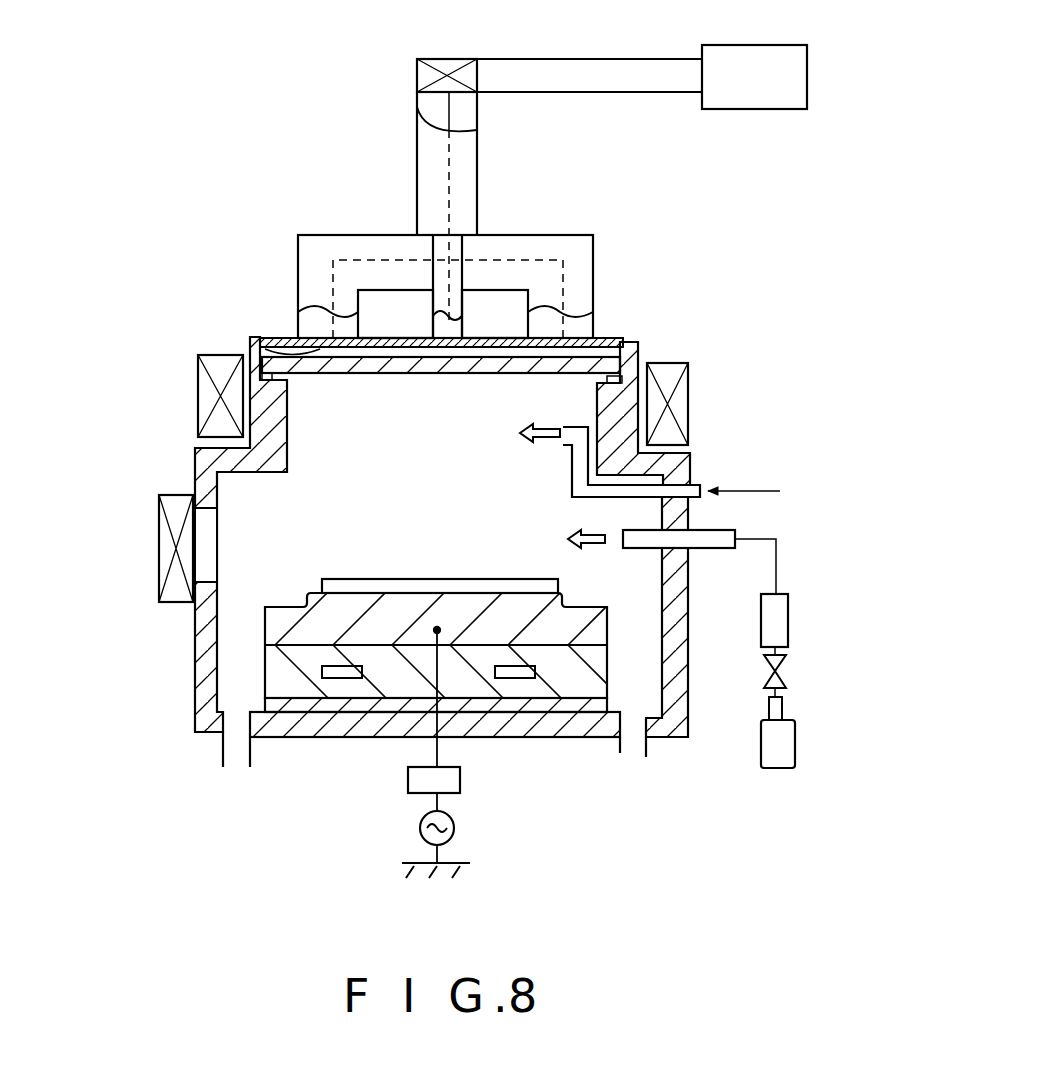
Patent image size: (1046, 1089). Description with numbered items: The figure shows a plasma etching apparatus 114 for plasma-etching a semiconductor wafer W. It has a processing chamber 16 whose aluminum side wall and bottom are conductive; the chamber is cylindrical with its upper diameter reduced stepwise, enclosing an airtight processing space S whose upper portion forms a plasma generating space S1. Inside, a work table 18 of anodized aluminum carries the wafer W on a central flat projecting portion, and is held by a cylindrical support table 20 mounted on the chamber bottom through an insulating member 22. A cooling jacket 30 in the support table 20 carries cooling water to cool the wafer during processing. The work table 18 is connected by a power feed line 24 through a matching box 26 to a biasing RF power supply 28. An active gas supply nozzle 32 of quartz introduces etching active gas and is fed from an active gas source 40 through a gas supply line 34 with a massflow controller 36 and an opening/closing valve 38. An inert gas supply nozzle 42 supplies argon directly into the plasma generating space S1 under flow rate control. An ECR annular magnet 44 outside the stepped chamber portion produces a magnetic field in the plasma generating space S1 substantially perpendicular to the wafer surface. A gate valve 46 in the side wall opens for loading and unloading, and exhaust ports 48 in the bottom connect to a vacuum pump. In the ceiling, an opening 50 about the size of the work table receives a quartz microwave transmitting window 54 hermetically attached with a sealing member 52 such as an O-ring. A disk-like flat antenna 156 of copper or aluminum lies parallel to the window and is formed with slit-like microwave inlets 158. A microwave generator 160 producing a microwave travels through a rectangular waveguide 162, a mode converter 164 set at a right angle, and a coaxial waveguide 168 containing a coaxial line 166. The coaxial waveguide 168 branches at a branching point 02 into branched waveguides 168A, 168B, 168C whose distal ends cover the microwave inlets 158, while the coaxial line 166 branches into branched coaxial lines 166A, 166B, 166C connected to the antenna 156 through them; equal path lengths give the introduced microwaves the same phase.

The processing chamber 16 is at (680, 458).
The work table 18 is at (282, 607).
The support table 20 is at (273, 678).
The insulating member 22 is at (373, 712).
The power feed line 24 is at (440, 748).
The matching box 26 is at (460, 780).
The biasing RF power supply 28 is at (455, 826).
The cooling jacket 30 is at (328, 678).
The active gas supply nozzle 32 is at (730, 533).
The gas supply line 34 is at (776, 560).
The massflow controller 36 is at (788, 612).
The opening/closing valve 38 is at (786, 660).
The active gas source 40 is at (795, 735).
The inert gas supply nozzle 42 is at (700, 487).
The ECR annular magnet 44 is at (197, 405).
The gate valve 46 is at (159, 560).
The exhaust ports 48 is at (232, 758).
The opening 50 is at (363, 377).
The sealing member 52 is at (245, 346).
The microwave transmitting window 54 is at (637, 352).
The plasma etching apparatus 114 is at (142, 737).
The flat antenna 156 is at (277, 337).
The microwave inlets 158 is at (263, 350).
The microwave generator 160 is at (807, 73).
The rectangular waveguide 162 is at (577, 59).
The mode converter 164 is at (458, 58).
The coaxial line 166 is at (455, 116).
The branched coaxial line 166A is at (322, 323).
The branched coaxial line 166B is at (440, 305).
The branched coaxial line 166C is at (568, 326).
The coaxial waveguide 168 is at (477, 157).
The branched waveguide 168A is at (316, 235).
The branched waveguide 168B is at (528, 303).
The branched waveguide 168C is at (593, 244).
The branching point 02 is at (450, 258).
The semiconductor wafer W is at (330, 578).
The processing space S is at (422, 526).
The plasma generating space S1 is at (420, 456).